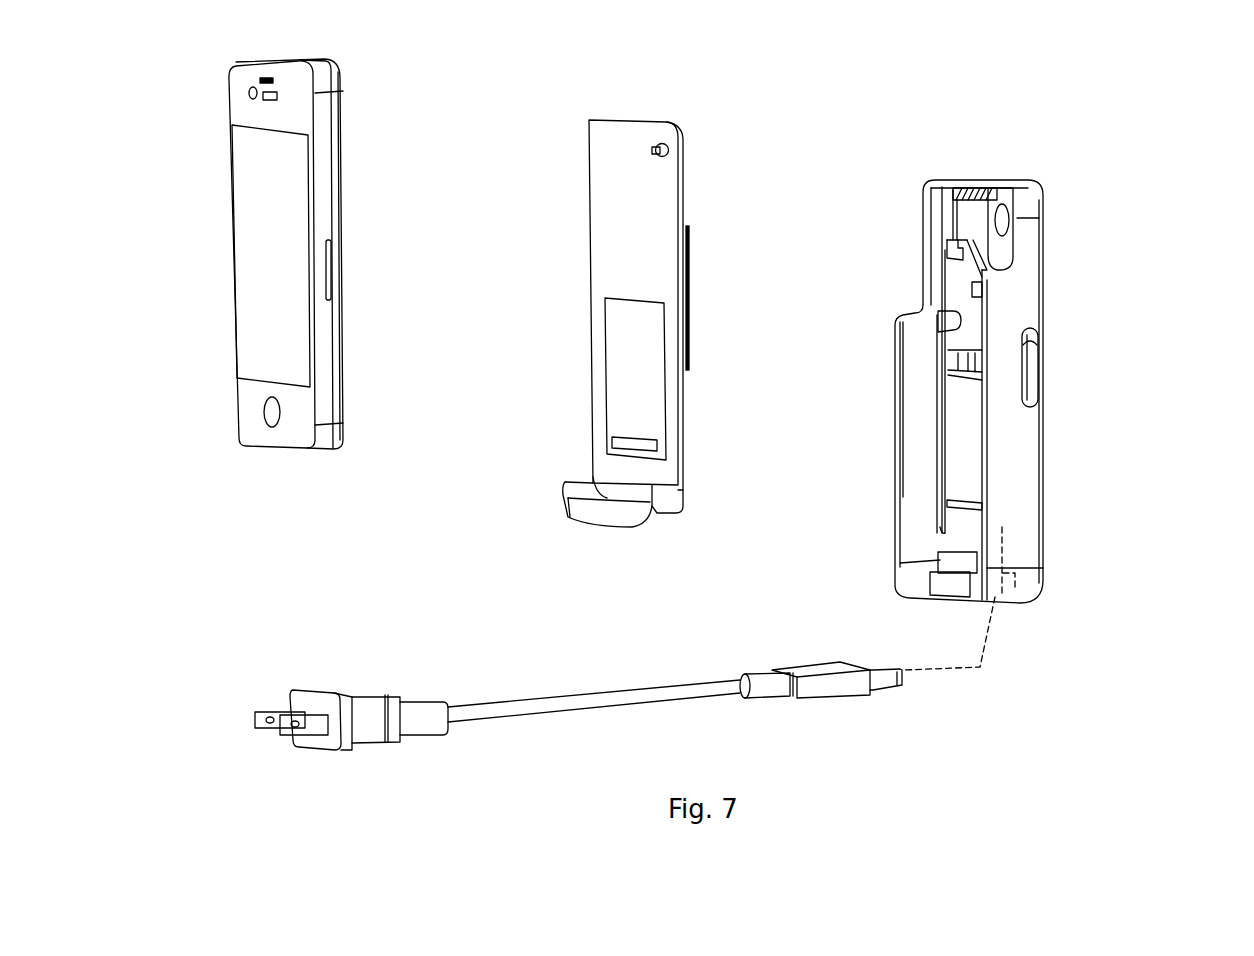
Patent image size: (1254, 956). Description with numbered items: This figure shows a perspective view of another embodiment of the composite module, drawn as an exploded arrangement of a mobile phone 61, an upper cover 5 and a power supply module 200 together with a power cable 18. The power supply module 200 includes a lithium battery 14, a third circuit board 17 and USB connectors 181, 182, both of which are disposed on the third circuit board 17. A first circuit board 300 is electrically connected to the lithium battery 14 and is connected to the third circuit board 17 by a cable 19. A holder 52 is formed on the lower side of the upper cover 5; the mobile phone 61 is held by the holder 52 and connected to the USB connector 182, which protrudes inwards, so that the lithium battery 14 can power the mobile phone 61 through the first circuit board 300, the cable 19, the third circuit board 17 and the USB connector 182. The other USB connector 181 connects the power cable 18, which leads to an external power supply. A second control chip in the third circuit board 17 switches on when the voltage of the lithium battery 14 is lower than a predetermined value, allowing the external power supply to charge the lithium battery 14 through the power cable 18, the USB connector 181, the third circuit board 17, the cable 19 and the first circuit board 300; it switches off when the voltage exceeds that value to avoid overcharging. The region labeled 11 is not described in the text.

The upper cover 5 is at (613, 215).
The camera opening bracket 11 is at (953, 227).
The lithium battery 14 is at (977, 495).
The third circuit board 17 is at (980, 550).
The power cable 18 is at (650, 697).
The cable 19 is at (943, 530).
The holder 52 is at (633, 522).
The mobile phone 61 is at (330, 388).
The USB connector 181 is at (1008, 598).
The USB connector 182 is at (947, 587).
The power supply module 200 is at (1014, 425).
The first circuit board 300 is at (957, 273).